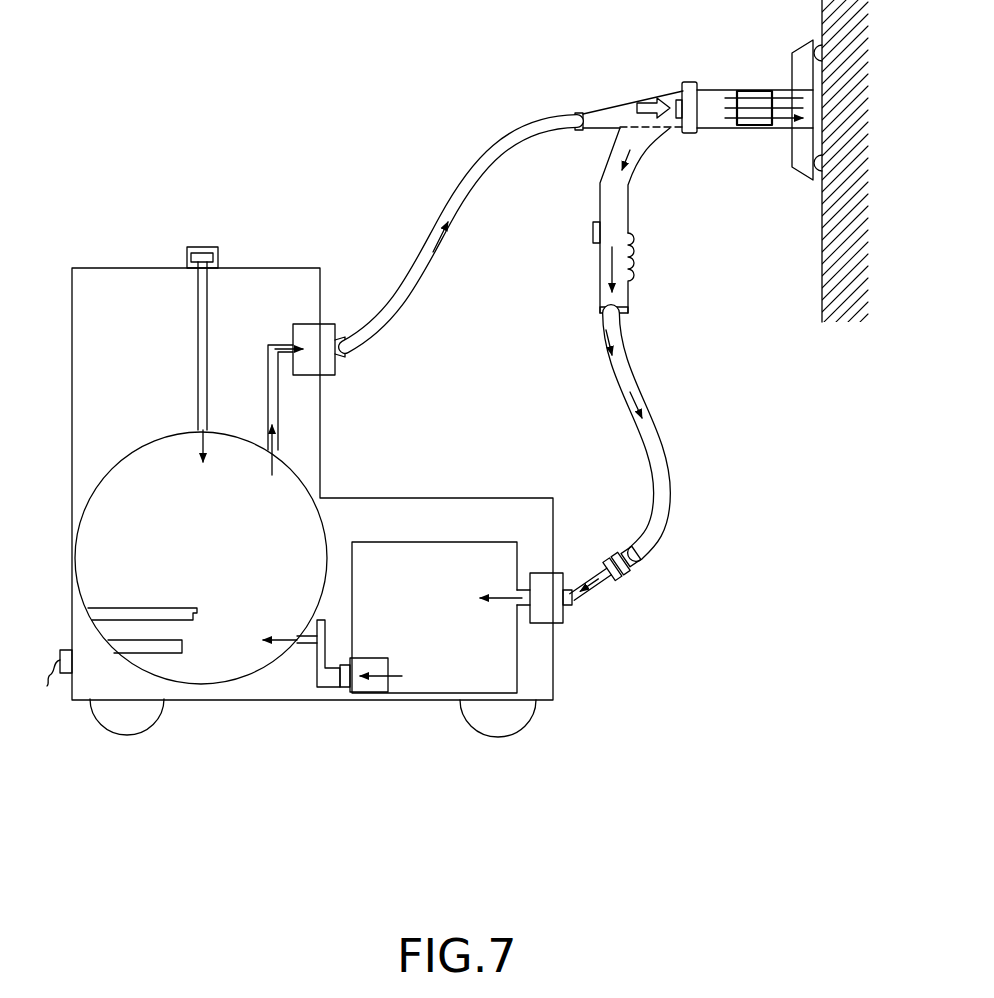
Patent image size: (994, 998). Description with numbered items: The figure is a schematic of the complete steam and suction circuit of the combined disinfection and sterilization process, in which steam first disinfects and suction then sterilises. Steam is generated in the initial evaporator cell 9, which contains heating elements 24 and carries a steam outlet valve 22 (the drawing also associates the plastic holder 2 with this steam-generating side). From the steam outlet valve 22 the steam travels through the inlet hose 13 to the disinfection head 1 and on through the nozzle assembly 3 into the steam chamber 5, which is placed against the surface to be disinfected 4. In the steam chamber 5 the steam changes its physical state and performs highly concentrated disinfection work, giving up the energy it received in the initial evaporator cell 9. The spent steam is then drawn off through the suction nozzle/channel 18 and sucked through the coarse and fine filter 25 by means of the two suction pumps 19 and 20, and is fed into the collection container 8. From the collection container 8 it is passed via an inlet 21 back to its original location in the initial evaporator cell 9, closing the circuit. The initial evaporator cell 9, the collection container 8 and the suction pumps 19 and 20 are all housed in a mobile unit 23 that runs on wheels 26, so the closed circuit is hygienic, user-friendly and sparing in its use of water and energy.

The disinfection head 1 is at (714, 88).
The plastic holder 2 is at (600, 272).
The nozzle assembly 3 is at (757, 102).
The surface to be disinfected 4 is at (822, 266).
The steam chamber 5 is at (776, 100).
The collection container 8 is at (432, 700).
The initial evaporator cell 9 is at (276, 503).
The inlet hose 13 is at (578, 112).
The suction nozzle/channel 18 is at (725, 133).
The suction pump 19 is at (563, 622).
The suction pump 20 is at (368, 693).
The inlet 21 is at (316, 683).
The steam outlet valve 22 is at (333, 322).
The mobile unit 23 is at (100, 265).
The heating elements 24 is at (190, 616).
The coarse and fine filter 25 is at (645, 570).
The wheels 26 is at (520, 735).